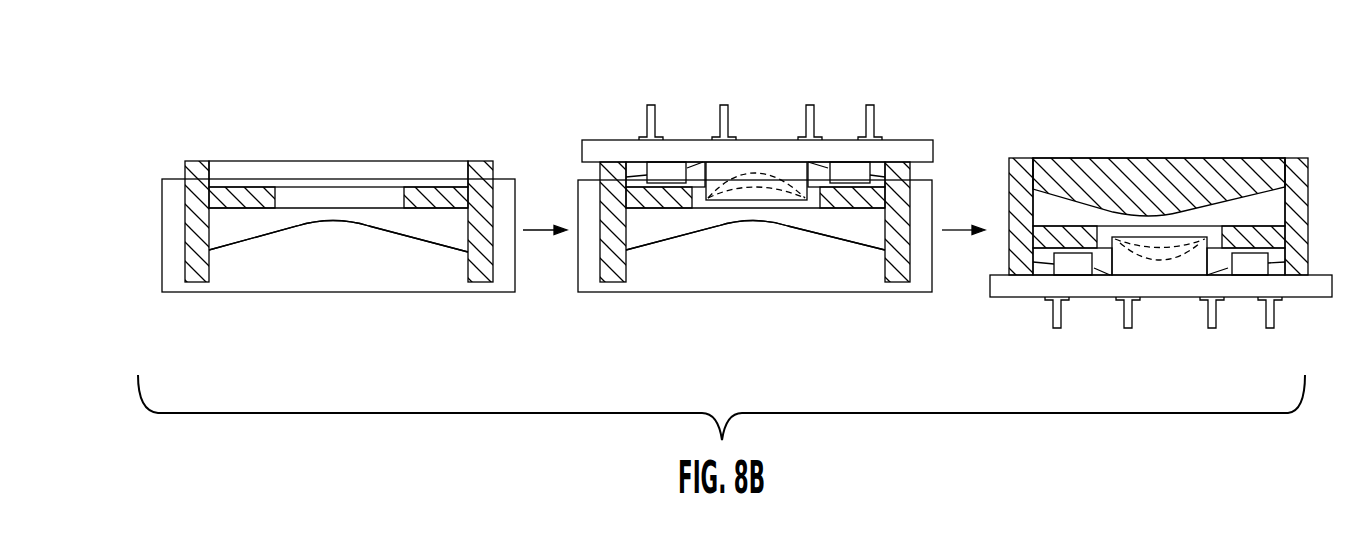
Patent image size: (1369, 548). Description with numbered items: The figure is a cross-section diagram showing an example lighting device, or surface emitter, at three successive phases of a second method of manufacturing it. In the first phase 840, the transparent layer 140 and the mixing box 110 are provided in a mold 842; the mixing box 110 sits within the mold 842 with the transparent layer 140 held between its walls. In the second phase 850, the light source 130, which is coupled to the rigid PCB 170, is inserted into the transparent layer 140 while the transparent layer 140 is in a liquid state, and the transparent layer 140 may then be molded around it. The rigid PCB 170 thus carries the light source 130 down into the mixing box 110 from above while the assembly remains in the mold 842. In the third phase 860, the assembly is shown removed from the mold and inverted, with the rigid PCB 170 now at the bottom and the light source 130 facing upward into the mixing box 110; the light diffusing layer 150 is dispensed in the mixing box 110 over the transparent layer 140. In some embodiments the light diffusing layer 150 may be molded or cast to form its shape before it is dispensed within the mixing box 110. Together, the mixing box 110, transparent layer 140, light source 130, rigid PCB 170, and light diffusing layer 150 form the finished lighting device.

The mixing box 110 is at (193, 182).
The light source 130 is at (737, 195).
The transparent layer 140 is at (240, 227).
The light diffusing layer 150 is at (1080, 185).
The rigid PCB 170 is at (678, 148).
The first phase of second manufacturing method 840 is at (325, 105).
The mold 842 is at (402, 267).
The second phase of second manufacturing method 850 is at (753, 50).
The third phase of second manufacturing method 860 is at (1193, 92).